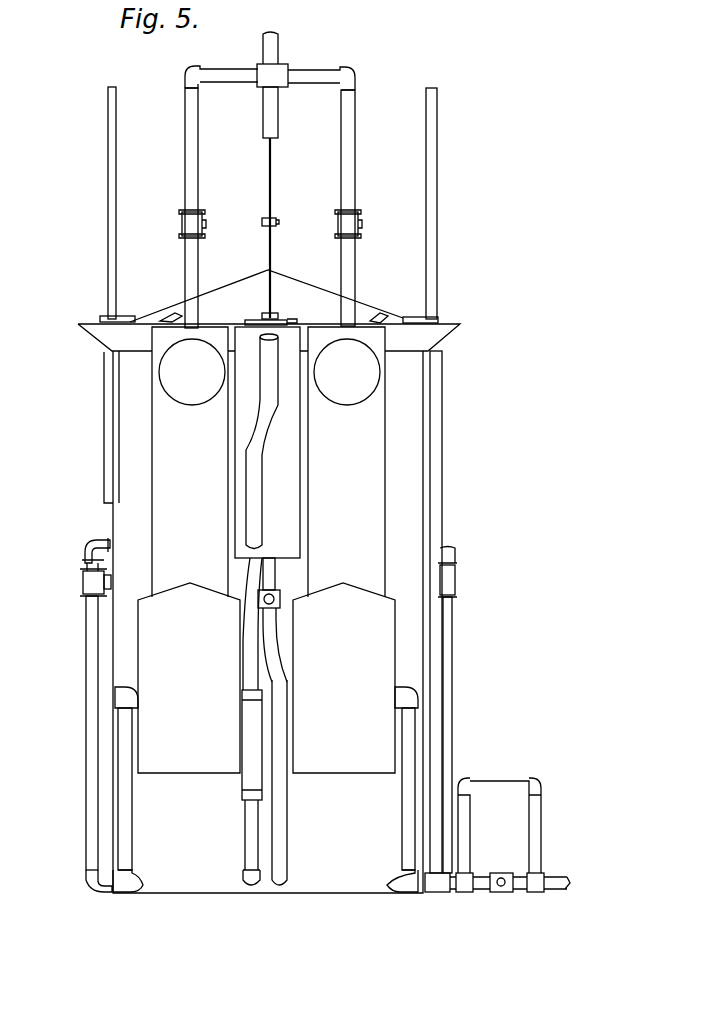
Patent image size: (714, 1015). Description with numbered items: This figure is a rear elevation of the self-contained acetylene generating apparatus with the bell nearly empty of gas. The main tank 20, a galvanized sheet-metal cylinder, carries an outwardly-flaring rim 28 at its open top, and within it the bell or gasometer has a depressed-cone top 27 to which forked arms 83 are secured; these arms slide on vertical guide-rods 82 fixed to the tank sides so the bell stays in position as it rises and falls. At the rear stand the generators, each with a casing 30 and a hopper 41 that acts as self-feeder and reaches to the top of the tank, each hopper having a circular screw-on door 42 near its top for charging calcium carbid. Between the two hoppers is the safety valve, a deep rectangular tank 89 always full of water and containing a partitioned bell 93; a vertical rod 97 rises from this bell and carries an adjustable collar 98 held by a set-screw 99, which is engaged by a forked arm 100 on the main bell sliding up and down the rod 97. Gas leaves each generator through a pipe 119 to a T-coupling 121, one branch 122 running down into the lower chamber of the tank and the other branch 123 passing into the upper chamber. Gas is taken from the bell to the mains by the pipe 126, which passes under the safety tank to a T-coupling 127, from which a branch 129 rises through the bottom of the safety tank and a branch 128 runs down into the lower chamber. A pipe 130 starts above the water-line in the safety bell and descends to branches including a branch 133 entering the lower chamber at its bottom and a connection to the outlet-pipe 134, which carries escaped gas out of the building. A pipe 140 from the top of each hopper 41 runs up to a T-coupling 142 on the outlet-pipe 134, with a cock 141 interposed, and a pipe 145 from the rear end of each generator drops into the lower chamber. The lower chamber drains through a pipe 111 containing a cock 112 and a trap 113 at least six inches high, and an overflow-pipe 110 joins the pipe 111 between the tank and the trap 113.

The main tank 20 is at (263, 622).
The top of the bell 27 is at (298, 318).
The outwardly-flaring rim 28 is at (436, 342).
The casing of the generator 30 is at (266, 678).
The hopper 41 is at (268, 462).
The door 42 is at (269, 372).
The vertical guide-rods 82 is at (117, 181).
The forked arms 83 is at (122, 317).
The safety-valve tank 89 is at (288, 431).
The bell of the safety-valve 93 is at (287, 323).
The vertical rod 97 is at (274, 247).
The adjustable collar 98 is at (265, 225).
The set-screw 99 is at (280, 221).
The forked arm 100 is at (269, 314).
The overflow-pipe 110 is at (442, 409).
The drain pipe 111 is at (485, 886).
The cock 112 is at (501, 874).
The trap 113 is at (500, 783).
The gas pipes 119 is at (106, 541).
The T-coupling 121 is at (84, 586).
The branch pipe 122 is at (86, 751).
The branch pipe 123 is at (110, 578).
The gas main pipe 126 is at (280, 611).
The T-coupling 127 is at (281, 600).
The branch pipe 128 is at (288, 696).
The branch pipe 129 is at (276, 580).
The pipe 130 is at (250, 640).
The branch pipe 133 is at (249, 836).
The outlet-pipe 134 is at (279, 109).
The pipe 140 is at (199, 152).
The cock 141 is at (201, 223).
The T-coupling 142 is at (284, 74).
The pipe 145 is at (126, 811).